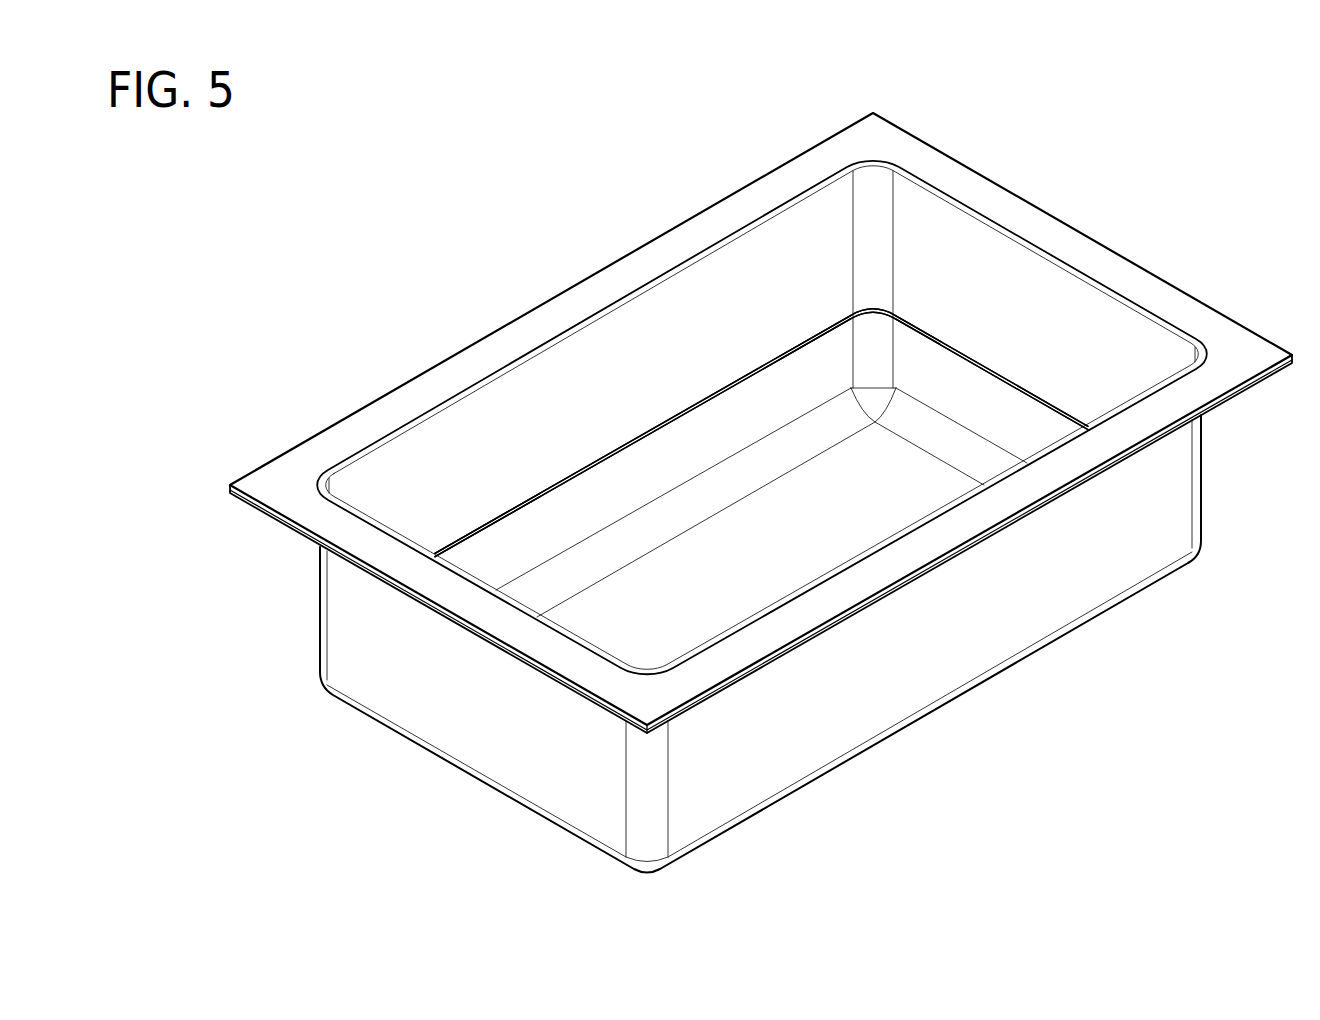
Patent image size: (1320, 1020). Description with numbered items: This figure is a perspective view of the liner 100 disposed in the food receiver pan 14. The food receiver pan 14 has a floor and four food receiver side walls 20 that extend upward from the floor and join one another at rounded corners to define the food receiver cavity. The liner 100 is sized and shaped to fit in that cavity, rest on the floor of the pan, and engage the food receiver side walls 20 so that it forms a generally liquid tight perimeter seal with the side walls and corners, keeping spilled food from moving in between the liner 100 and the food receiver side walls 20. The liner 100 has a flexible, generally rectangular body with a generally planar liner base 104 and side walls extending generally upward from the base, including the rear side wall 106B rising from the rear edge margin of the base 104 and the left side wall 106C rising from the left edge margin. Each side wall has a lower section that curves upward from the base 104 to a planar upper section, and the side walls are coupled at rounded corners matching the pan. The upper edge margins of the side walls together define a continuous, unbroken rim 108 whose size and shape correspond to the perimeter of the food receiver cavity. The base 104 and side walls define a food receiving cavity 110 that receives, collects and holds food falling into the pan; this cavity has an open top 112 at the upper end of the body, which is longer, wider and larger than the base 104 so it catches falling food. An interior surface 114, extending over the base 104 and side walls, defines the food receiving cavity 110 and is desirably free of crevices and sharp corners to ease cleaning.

The food receiver pan 14 is at (1150, 265).
The food receiver side walls 20 is at (748, 263).
The liner 100 is at (607, 436).
The liner base 104 is at (860, 525).
The rear side wall 106B is at (1003, 412).
The left side wall 106C is at (727, 422).
The rim 108 is at (500, 512).
The food receiving cavity 110 is at (720, 596).
The open top 112 is at (800, 367).
The interior surface 114 is at (612, 605).